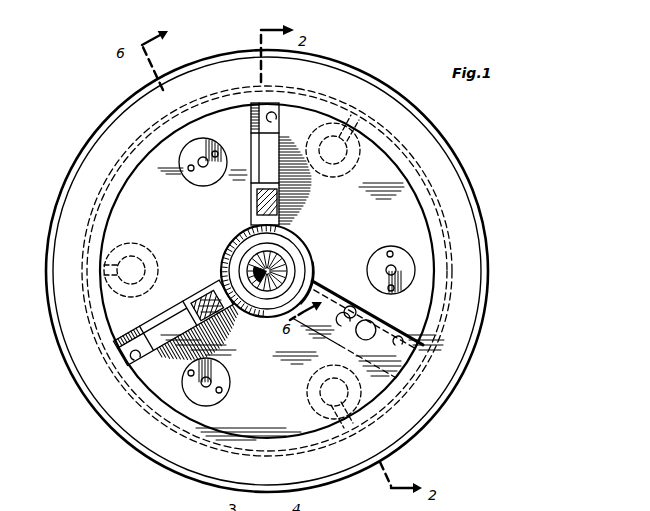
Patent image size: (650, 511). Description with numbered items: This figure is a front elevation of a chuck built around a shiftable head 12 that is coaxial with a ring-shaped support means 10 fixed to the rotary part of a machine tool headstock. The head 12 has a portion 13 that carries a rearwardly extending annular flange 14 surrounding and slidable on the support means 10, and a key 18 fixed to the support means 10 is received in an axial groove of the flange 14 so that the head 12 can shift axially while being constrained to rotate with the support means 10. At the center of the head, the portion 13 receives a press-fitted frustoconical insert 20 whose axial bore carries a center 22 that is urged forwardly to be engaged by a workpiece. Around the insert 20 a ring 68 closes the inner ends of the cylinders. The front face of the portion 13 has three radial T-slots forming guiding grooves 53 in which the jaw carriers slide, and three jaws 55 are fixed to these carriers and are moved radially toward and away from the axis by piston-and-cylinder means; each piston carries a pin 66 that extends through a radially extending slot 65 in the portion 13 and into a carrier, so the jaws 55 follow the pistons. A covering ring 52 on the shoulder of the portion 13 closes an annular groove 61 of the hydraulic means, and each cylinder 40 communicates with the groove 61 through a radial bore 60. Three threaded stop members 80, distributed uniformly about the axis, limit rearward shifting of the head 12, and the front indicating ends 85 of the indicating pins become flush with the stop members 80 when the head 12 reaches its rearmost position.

The frustoconical insert 20 is at (282, 245).
The center 22 is at (275, 262).
The ring 68 is at (314, 266).
The jaws 55 is at (278, 190).
The guiding grooves 53 is at (276, 118).
The slot 65 is at (362, 320).
The pin 66 is at (343, 325).
The stop members 80 is at (197, 176).
The indicating ends 85 is at (207, 167).
The cylinder 40 is at (312, 398).
The covering ring 52 is at (466, 307).
The annular groove 61 is at (440, 340).
The radial bore 60 is at (380, 426).
The support means 10 is at (89, 506).
The key 18 is at (134, 506).
The annular flange 14 is at (177, 506).
The shiftable head 12 is at (271, 506).
The portion 13 is at (361, 506).